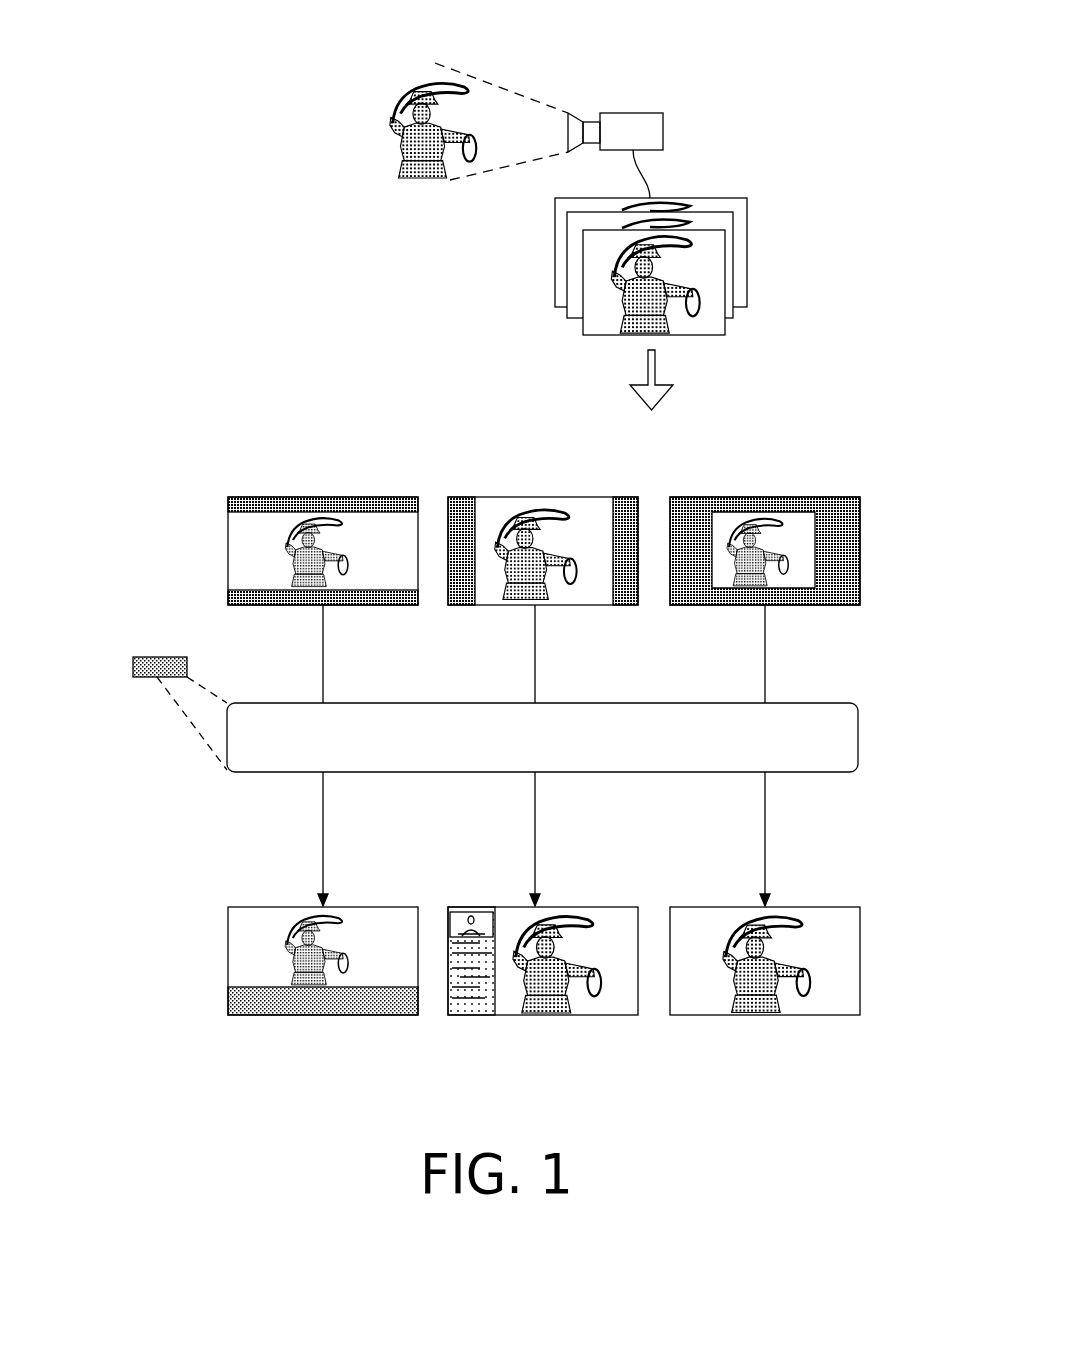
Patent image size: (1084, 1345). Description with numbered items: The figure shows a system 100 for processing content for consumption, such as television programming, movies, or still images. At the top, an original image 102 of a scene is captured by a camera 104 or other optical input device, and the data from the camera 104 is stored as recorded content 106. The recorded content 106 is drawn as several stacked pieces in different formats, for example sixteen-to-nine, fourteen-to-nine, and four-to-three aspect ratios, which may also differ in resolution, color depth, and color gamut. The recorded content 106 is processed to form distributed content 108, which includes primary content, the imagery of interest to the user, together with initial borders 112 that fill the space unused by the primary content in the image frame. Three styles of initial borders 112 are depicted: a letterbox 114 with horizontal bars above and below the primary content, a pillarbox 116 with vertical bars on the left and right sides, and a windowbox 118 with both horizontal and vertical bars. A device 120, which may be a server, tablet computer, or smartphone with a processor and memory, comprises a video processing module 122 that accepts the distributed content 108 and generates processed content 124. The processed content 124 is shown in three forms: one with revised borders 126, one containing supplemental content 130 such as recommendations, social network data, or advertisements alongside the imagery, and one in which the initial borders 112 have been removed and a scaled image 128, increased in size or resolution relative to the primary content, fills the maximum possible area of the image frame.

The system 100 is at (781, 40).
The original image 102 is at (388, 78).
The camera 104 is at (590, 130).
The recorded content 106 is at (597, 279).
The distributed content 108 is at (486, 493).
The initial borders 112 is at (683, 495).
The letterbox 114 is at (302, 497).
The pillarbox 116 is at (627, 497).
The windowbox 118 is at (810, 497).
The device 120 is at (181, 702).
The video processing module 122 is at (542, 737).
The processed content 124 is at (491, 961).
The revised borders 126 is at (337, 997).
The scaled image 128 is at (692, 1009).
The supplemental content 130 is at (472, 1003).